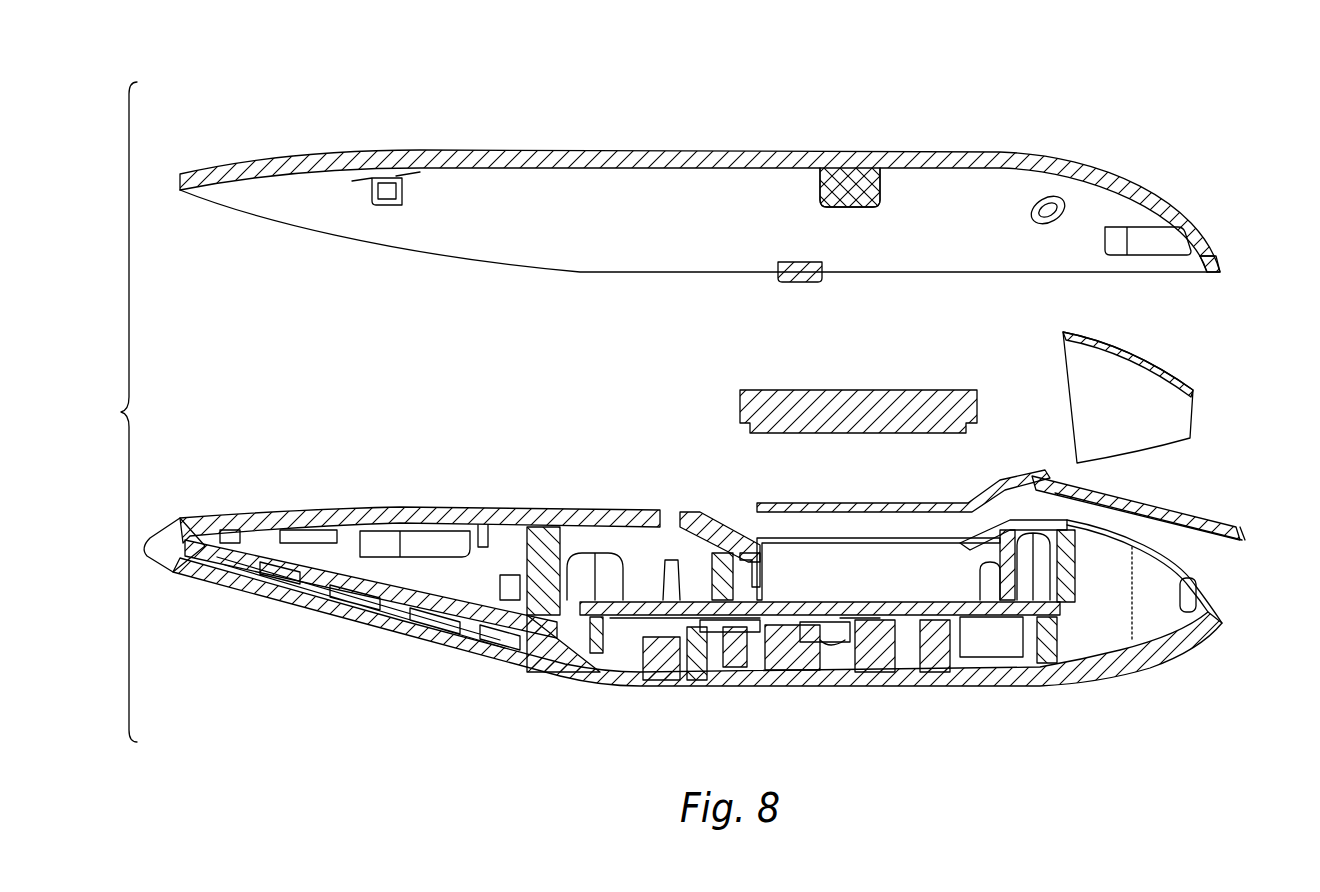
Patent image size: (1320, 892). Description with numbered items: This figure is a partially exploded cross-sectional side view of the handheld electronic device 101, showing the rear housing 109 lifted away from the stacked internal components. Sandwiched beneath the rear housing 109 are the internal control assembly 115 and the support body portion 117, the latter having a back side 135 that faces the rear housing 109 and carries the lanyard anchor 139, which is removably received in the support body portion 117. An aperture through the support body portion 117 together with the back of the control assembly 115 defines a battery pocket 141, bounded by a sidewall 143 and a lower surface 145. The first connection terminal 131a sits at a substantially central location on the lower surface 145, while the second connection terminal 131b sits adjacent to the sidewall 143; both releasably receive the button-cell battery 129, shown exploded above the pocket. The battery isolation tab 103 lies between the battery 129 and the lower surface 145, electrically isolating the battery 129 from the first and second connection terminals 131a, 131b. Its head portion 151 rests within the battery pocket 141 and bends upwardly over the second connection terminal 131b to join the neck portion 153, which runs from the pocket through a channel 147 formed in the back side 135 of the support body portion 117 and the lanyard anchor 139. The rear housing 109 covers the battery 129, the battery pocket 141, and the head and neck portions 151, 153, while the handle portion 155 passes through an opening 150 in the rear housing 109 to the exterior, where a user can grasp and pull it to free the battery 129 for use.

The device 101 is at (175, 498).
The battery isolation tab 103 is at (1015, 478).
The rear housing 109 is at (510, 150).
The internal control assembly 115 is at (420, 582).
The support body portion 117 is at (450, 520).
The battery 129 is at (868, 392).
The first connection terminal 131a is at (850, 640).
The second connection terminal 131b is at (960, 600).
The back side 135 is at (487, 512).
The lanyard anchor 139 is at (1195, 408).
The battery pocket 141 is at (712, 518).
The sidewall 143 is at (757, 535).
The lower surface 145 is at (762, 640).
The channel 147 is at (1062, 334).
The opening 150 is at (1222, 245).
The head portion 151 is at (962, 498).
The neck portion 153 is at (1132, 493).
The handle portion 155 is at (1233, 528).